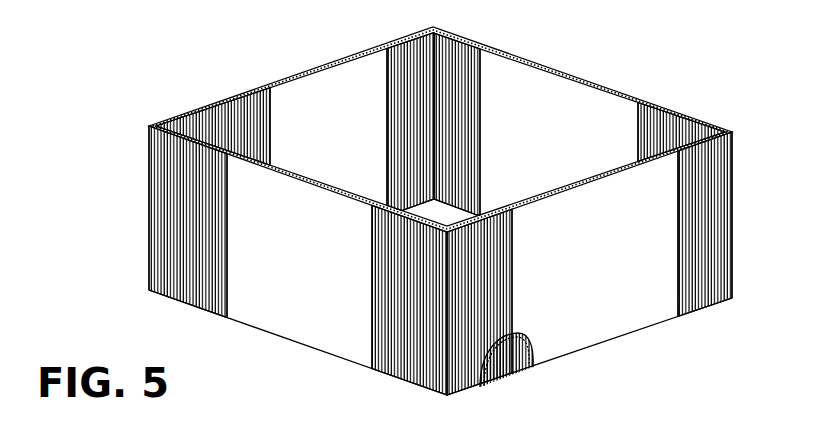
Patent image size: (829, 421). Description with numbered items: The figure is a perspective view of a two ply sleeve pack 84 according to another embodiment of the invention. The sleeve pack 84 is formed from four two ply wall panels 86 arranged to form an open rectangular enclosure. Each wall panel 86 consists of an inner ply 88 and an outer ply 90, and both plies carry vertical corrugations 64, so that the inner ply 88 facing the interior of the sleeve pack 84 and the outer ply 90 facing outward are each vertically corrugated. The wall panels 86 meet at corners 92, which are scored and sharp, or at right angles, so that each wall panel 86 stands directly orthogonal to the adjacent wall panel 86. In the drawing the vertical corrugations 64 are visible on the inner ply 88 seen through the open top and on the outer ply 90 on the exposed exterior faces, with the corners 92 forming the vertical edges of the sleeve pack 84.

The two ply sleeve pack 84 is at (122, 316).
The two ply wall panel 86 is at (296, 74).
The inner ply 88 is at (361, 136).
The outer ply 90 is at (332, 266).
The corner 92 is at (436, 27).
The vertical corrugations 64 is at (273, 101).